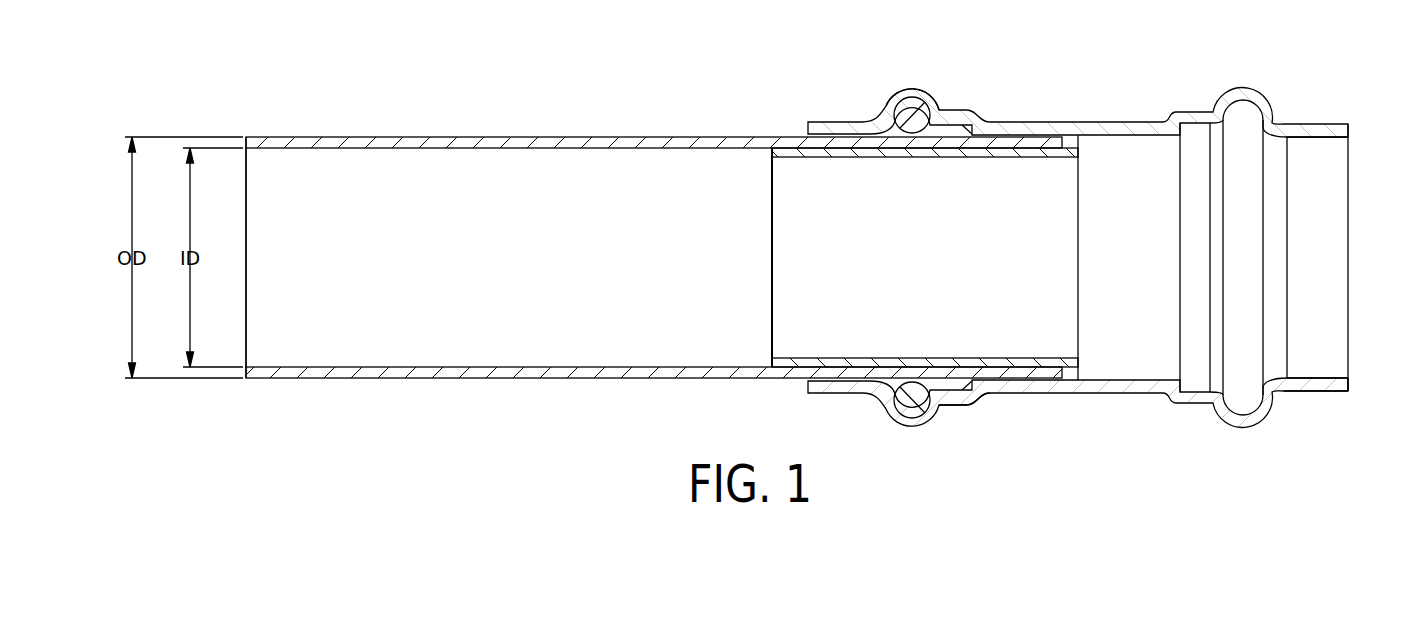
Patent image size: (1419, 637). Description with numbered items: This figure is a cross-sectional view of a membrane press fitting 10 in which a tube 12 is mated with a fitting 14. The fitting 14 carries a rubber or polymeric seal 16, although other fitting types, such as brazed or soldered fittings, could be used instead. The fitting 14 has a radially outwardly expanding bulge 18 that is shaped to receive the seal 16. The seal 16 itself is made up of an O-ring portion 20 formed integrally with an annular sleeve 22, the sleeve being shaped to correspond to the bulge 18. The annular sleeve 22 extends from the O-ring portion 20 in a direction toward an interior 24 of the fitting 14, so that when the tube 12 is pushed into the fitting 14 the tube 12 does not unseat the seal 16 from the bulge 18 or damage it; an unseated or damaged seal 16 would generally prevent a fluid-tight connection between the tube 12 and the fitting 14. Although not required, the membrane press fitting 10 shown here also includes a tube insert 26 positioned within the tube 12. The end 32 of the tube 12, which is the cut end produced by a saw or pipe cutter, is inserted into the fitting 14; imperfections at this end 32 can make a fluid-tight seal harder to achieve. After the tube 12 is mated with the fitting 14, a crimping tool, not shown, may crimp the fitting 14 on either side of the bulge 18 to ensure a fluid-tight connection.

The membrane press fitting 10 is at (1141, 114).
The tube 12 is at (445, 383).
The fitting 14 is at (1317, 390).
The seal 16 is at (905, 113).
The bulge 18 is at (913, 95).
The O-ring portion 20 is at (907, 402).
The annular sleeve 22 is at (953, 385).
The interior 24 is at (1320, 253).
The tube insert 26 is at (797, 333).
The end 32 is at (247, 369).